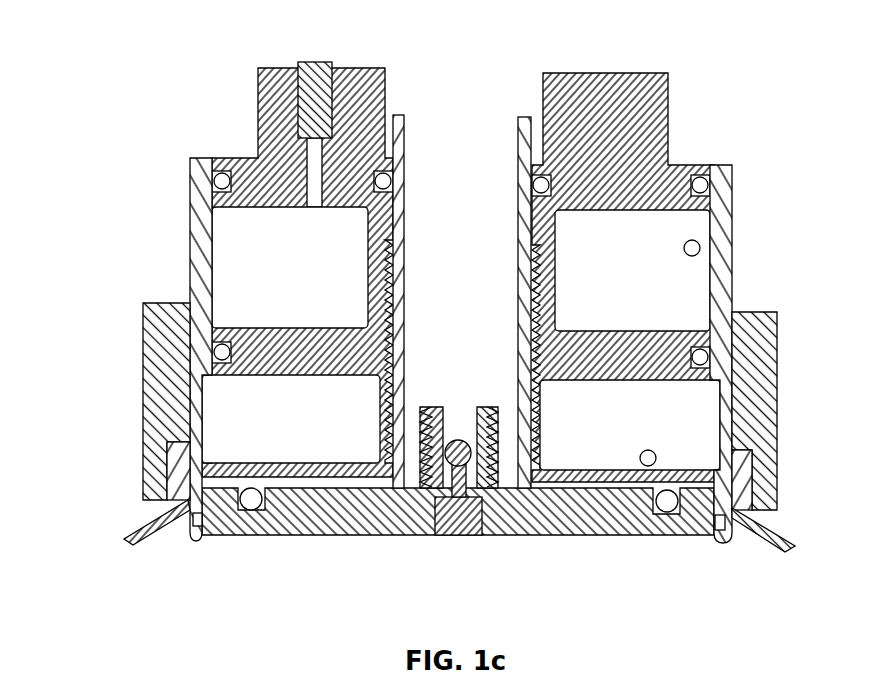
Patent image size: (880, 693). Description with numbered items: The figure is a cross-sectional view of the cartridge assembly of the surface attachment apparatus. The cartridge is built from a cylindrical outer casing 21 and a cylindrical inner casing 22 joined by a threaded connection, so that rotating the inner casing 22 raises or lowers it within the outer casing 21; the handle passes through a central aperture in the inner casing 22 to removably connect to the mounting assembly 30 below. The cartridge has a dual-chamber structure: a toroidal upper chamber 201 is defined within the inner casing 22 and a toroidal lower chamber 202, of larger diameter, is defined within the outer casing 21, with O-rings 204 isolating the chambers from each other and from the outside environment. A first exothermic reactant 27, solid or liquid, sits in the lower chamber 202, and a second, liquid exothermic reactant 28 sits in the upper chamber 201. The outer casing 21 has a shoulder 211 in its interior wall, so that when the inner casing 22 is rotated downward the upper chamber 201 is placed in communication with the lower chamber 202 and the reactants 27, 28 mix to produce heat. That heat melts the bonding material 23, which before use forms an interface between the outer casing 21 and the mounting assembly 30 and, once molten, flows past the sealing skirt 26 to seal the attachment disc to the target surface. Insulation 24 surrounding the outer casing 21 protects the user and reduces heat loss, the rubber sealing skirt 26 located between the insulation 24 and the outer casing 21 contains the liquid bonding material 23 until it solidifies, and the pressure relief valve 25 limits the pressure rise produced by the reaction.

The outer casing 21 is at (190, 250).
The inner casing 22 is at (258, 123).
The bonding material 23 is at (757, 505).
The insulation 24 is at (148, 350).
The pressure relief valve 25 is at (315, 62).
The sealing skirt 26 is at (123, 540).
The first exothermic reactant 27 is at (655, 462).
The second exothermic reactant 28 is at (697, 243).
The mounting assembly 30 is at (196, 543).
The upper chamber 201 is at (304, 278).
The lower chamber 202 is at (304, 418).
The O-rings 204 is at (733, 170).
The shoulder 211 is at (192, 392).